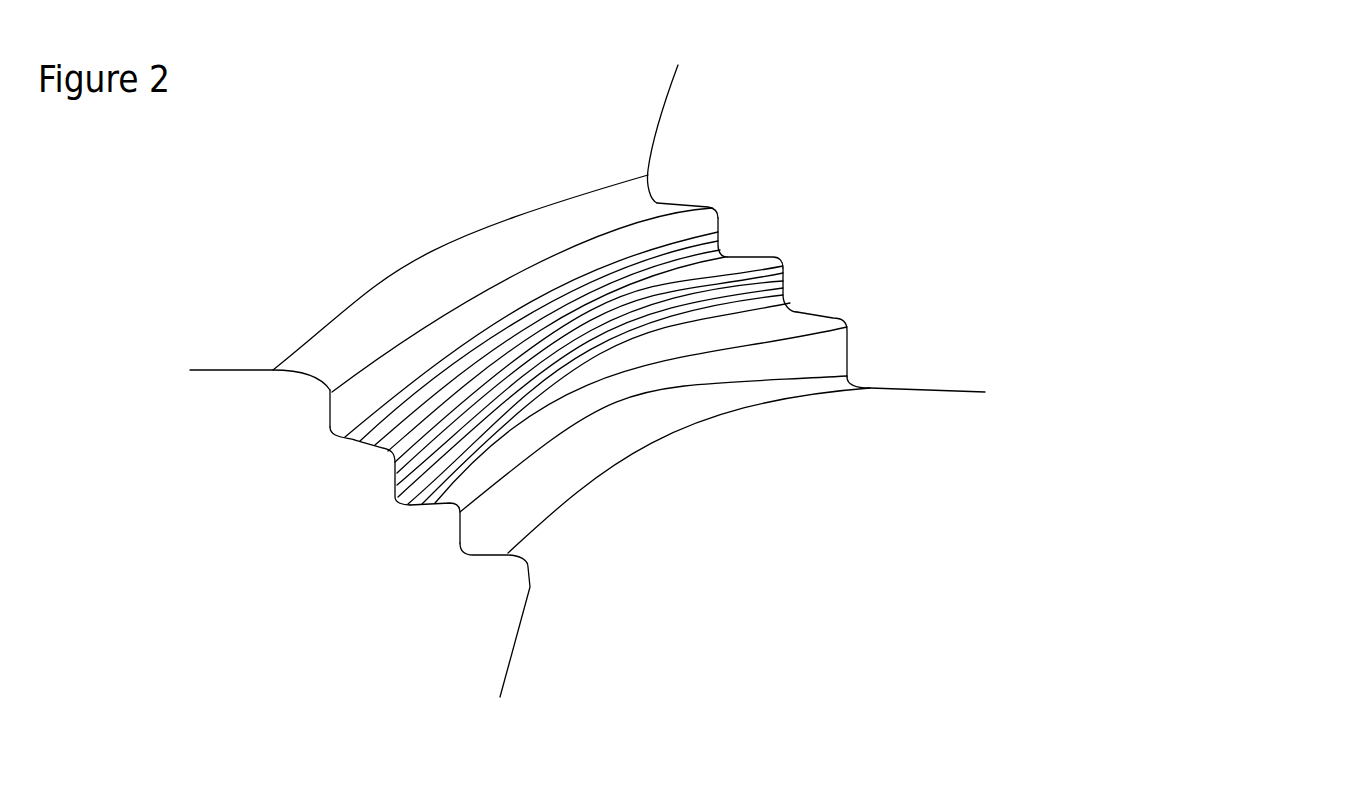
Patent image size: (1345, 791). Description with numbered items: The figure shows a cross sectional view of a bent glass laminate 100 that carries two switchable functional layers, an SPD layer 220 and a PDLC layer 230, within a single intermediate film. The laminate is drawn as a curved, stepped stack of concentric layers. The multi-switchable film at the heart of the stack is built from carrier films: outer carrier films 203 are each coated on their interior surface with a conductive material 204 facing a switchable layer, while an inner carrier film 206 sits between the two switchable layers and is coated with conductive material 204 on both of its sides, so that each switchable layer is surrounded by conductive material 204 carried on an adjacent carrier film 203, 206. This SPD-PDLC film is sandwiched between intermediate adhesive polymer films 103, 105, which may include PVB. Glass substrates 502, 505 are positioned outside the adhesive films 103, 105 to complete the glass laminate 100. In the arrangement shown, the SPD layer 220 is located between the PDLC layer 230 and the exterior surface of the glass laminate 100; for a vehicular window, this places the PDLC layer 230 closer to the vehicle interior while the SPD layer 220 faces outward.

The bent glass laminate 100 is at (1122, 123).
The glass substrate 502 is at (315, 348).
The intermediate adhesive polymer film 103 is at (340, 408).
The outer carrier film 203 is at (420, 500).
The conductive material 204 is at (663, 330).
The SPD layer 220 is at (707, 264).
The inner carrier film 206 is at (770, 267).
The PDLC layer 230 is at (773, 288).
The intermediate adhesive polymer film 105 is at (795, 318).
The glass substrate 505 is at (813, 377).